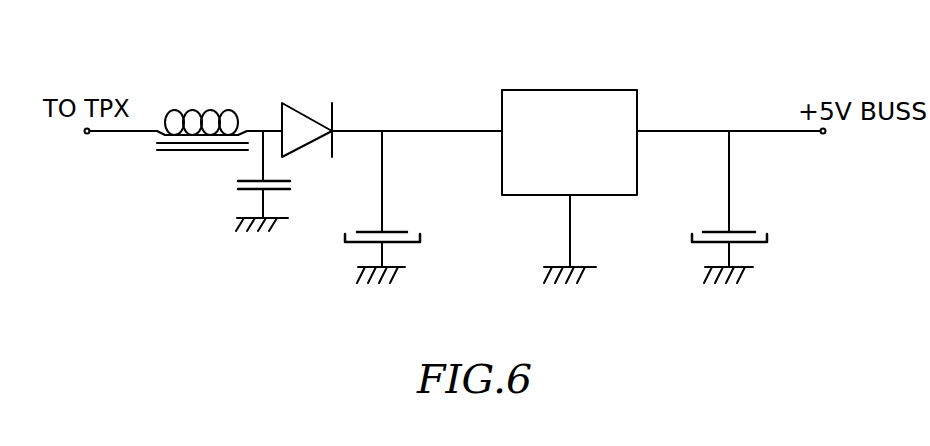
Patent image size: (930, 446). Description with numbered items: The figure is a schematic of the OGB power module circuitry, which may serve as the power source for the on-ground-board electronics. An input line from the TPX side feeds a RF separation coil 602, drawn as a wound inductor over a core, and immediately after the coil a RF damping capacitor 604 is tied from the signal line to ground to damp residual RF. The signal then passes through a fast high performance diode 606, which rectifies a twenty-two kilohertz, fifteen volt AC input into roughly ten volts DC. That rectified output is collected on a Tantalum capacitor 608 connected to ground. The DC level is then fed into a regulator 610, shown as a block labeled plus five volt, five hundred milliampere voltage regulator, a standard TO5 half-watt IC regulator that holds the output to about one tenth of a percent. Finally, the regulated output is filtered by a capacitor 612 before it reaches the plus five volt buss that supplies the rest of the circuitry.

The RF separation coil 602 is at (224, 112).
The RF damping capacitor 604 is at (250, 181).
The fast high performance diode 606 is at (307, 143).
The Tantalum capacitor 608 is at (383, 220).
The regulator 610 is at (570, 90).
The capacitor 612 is at (729, 210).